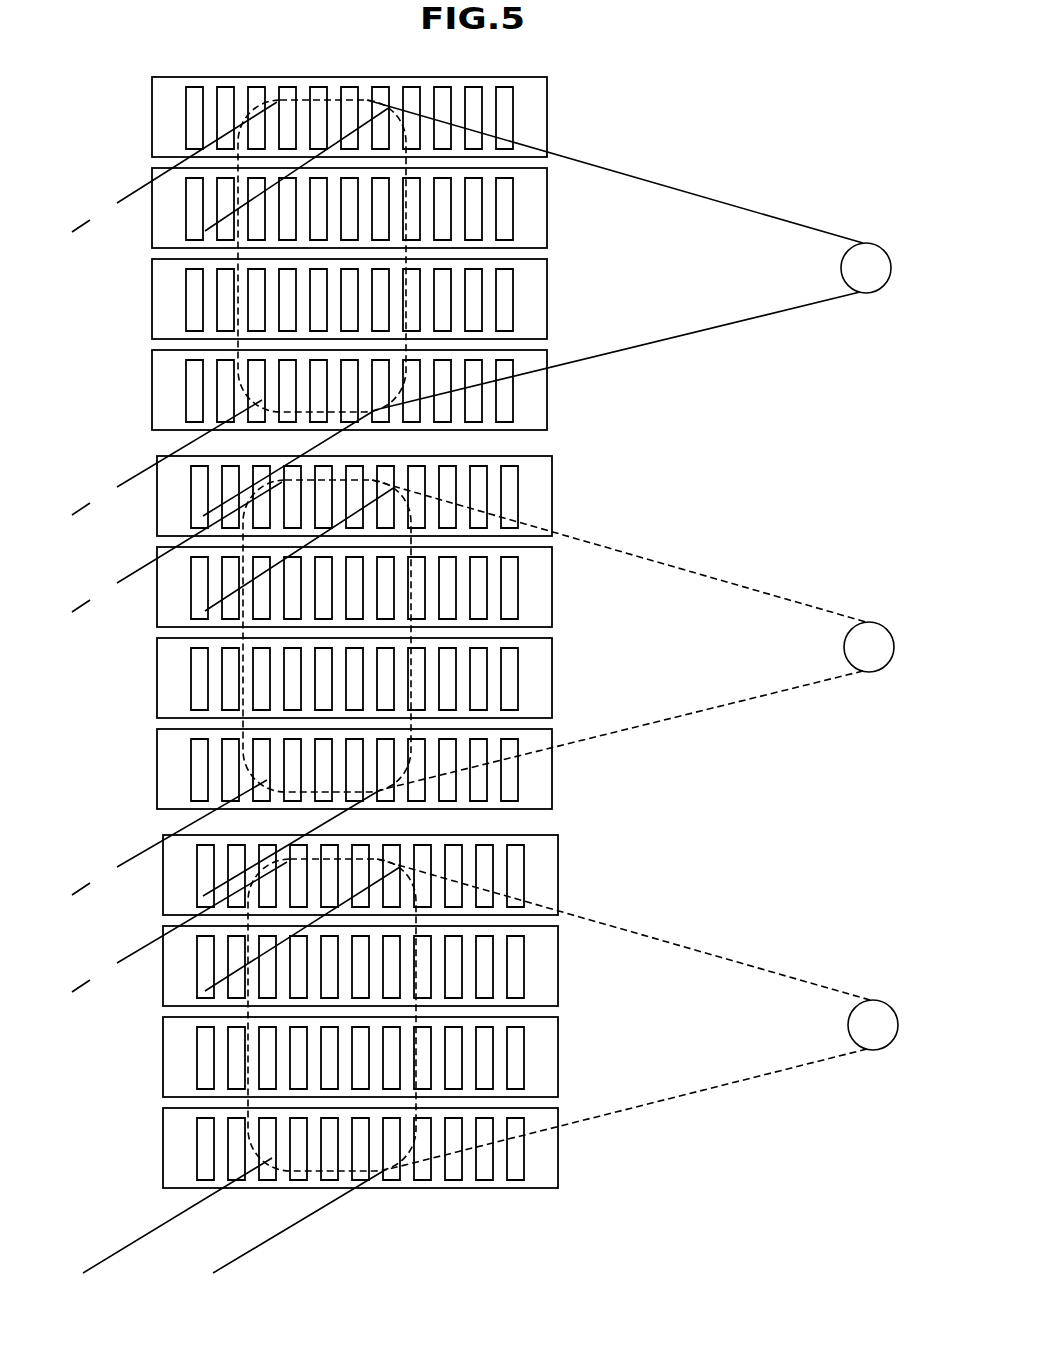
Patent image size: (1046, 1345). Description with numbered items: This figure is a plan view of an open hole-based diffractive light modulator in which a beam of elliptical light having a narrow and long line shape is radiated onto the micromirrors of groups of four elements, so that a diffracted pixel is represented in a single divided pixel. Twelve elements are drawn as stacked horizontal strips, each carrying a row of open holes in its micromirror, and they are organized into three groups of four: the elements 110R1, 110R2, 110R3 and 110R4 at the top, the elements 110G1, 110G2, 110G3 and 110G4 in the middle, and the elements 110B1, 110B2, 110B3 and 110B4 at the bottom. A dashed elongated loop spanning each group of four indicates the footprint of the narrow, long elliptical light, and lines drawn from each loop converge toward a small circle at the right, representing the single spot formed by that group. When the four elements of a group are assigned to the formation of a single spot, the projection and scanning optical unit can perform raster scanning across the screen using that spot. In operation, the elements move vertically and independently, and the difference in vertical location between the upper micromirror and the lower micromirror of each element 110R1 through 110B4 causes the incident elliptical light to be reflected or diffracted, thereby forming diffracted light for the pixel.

The element 110R1 is at (152, 122).
The element 110R2 is at (152, 213).
The element 110R3 is at (152, 304).
The element 110R4 is at (152, 395).
The element 110G1 is at (157, 501).
The element 110G2 is at (157, 592).
The element 110G3 is at (157, 683).
The element 110G4 is at (157, 774).
The element 110B1 is at (163, 880).
The element 110B2 is at (163, 971).
The element 110B3 is at (163, 1062).
The element 110B4 is at (163, 1153).